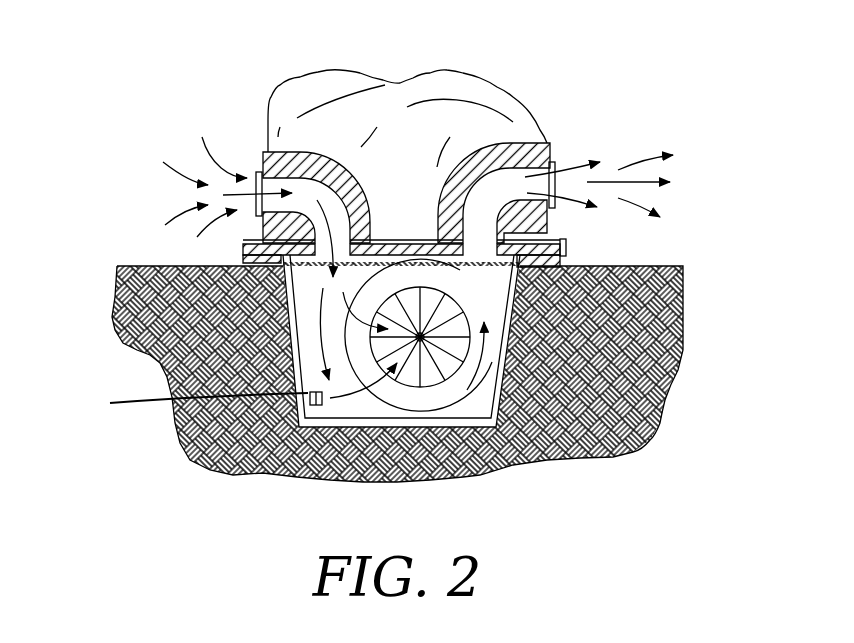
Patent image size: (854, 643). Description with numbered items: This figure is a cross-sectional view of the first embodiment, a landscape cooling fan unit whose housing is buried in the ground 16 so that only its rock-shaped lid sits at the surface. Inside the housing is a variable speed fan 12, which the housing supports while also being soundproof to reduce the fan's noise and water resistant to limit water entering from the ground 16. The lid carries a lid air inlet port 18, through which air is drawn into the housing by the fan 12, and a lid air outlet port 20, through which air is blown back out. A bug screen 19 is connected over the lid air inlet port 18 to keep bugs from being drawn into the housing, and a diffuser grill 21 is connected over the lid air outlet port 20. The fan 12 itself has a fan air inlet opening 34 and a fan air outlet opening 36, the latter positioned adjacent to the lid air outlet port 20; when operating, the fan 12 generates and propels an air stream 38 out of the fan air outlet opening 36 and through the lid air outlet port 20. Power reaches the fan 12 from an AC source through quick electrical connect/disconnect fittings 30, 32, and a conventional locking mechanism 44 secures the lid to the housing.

The variable speed fan 12 is at (478, 415).
The ground 16 is at (672, 307).
The lid air inlet port 18 is at (297, 118).
The bug screen 19 is at (257, 172).
The lid air outlet port 20 is at (508, 172).
The diffuser grill 21 is at (557, 163).
The quick electrical connect/disconnect fitting 30 is at (313, 405).
The quick electrical connect/disconnect fitting 32 is at (318, 405).
The fan air inlet opening 34 is at (420, 392).
The fan air outlet opening 36 is at (517, 297).
The air stream 38 is at (657, 182).
The locking mechanism 44 is at (568, 245).